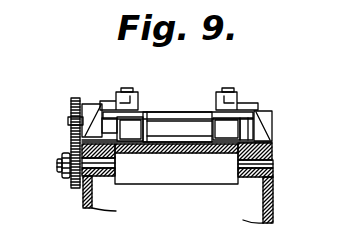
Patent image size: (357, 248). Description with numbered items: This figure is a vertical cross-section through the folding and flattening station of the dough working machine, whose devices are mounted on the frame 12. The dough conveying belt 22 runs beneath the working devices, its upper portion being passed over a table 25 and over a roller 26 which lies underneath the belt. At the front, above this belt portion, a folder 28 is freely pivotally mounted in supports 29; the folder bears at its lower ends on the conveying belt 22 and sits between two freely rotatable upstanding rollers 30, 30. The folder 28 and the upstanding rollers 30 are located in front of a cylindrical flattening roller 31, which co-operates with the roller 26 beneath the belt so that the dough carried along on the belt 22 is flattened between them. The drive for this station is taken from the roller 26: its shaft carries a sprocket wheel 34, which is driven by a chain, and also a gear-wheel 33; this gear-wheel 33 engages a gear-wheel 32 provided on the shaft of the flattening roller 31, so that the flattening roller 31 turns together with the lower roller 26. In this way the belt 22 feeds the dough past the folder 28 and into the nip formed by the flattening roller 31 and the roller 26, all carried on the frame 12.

The frame 12 is at (275, 203).
The dough conveying belt 22 is at (219, 148).
The table 25 is at (183, 155).
The roller 26 is at (152, 160).
The folder 28 is at (193, 130).
The supports 29 is at (107, 102).
The upstanding rollers 30 is at (133, 117).
The cylindrical flattening roller 31 is at (170, 118).
The gear-wheel 32 is at (70, 108).
The gear-wheel 33 is at (67, 181).
The sprocket wheel 34 is at (62, 153).